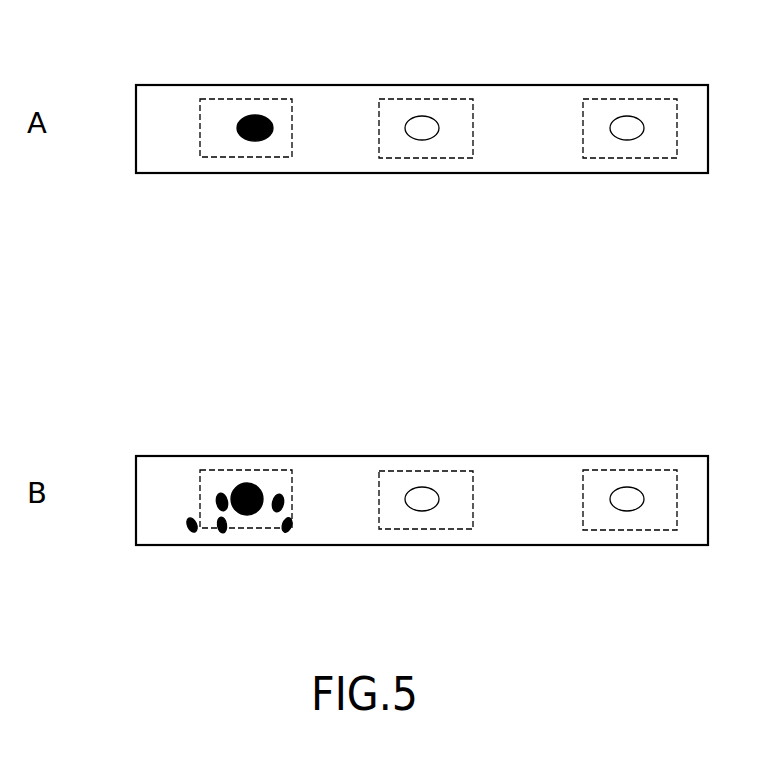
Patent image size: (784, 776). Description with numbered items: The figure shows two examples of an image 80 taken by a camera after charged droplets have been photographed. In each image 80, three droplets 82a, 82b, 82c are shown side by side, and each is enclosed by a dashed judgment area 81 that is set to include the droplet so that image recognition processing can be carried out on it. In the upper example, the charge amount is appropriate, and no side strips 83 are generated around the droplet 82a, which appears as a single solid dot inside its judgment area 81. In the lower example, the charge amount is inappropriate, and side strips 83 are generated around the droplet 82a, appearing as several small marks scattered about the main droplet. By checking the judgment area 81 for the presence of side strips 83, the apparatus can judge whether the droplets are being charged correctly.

In FIG. 5A, the image 80 is at (522, 85).
In FIG. 5B, the image 80 is at (520, 456).
In FIG. 5A, the judgment area 81 is at (220, 157).
In FIG. 5B, the judgment area 81 is at (275, 529).
In FIG. 5A, the droplet 82a is at (257, 116).
In FIG. 5B, the droplet 82a is at (258, 484).
In FIG. 5A, the droplet 82b is at (422, 116).
In FIG. 5B, the droplet 82b is at (422, 487).
In FIG. 5A, the droplet 82c is at (628, 116).
In FIG. 5B, the droplet 82c is at (627, 487).
In FIG. 5B, the side strips 83 is at (213, 526).